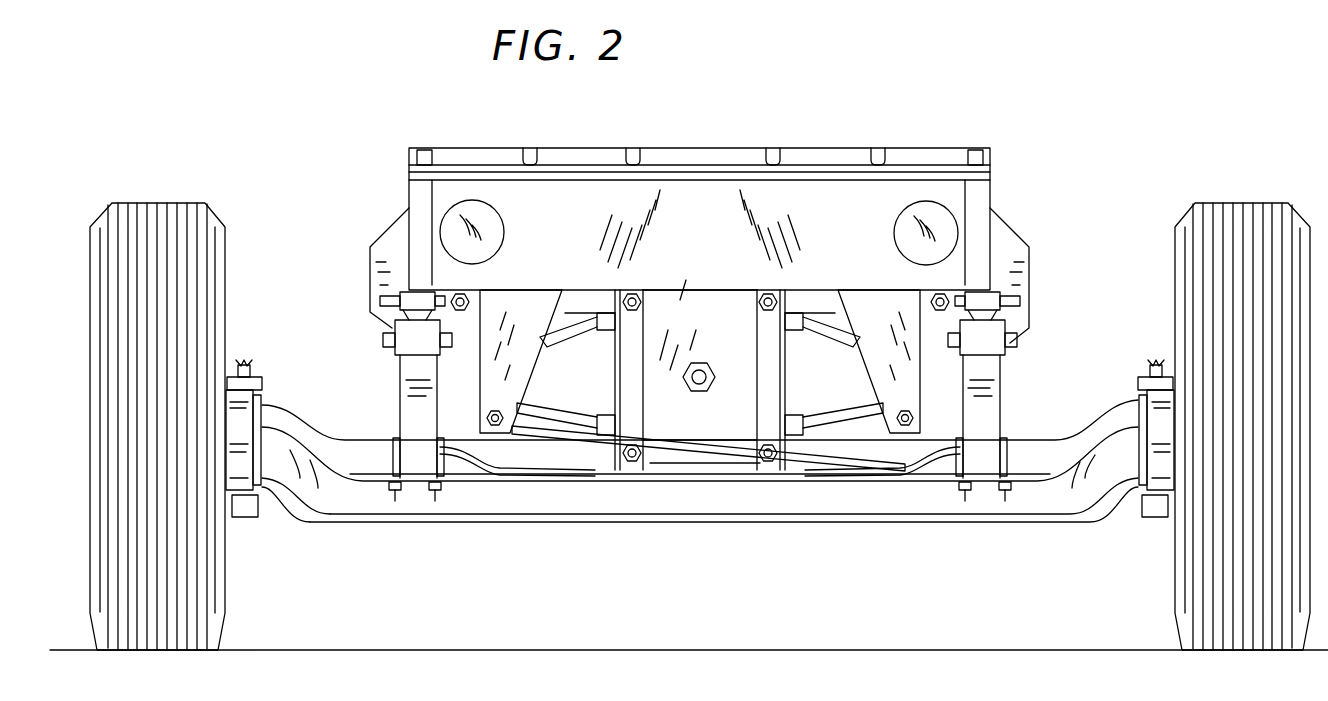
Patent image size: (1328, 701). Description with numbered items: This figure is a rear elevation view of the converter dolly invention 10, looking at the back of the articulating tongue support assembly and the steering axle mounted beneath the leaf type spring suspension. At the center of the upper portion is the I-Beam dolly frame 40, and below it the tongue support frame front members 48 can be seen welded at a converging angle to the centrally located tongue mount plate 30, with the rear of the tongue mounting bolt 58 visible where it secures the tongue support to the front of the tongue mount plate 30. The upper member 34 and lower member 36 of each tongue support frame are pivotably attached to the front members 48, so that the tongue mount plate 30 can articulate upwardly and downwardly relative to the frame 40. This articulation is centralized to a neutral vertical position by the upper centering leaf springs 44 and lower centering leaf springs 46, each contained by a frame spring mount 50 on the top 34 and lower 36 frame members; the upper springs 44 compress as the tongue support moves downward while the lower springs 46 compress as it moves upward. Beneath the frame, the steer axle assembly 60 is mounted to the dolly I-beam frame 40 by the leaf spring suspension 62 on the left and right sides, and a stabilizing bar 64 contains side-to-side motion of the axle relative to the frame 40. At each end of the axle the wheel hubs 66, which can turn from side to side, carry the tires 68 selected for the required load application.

The present invention 10 is at (1037, 128).
The tongue mount plate 30 is at (676, 478).
The upper member 34 is at (600, 300).
The lower member 36 is at (537, 452).
The I-Beam dolly frame 40 is at (1000, 195).
The upper centering leaf spring 44 is at (568, 332).
The lower centering leaf spring 46 is at (532, 398).
The front member 48 is at (610, 432).
The frame spring mount 50 is at (597, 417).
The tongue mounting bolt 58 is at (707, 370).
The steer axle assembly 60 is at (962, 524).
The leaf spring suspension 62 is at (400, 368).
The stabilizing bar 64 is at (724, 458).
The wheel hub 66 is at (236, 517).
The tire 68 is at (192, 203).